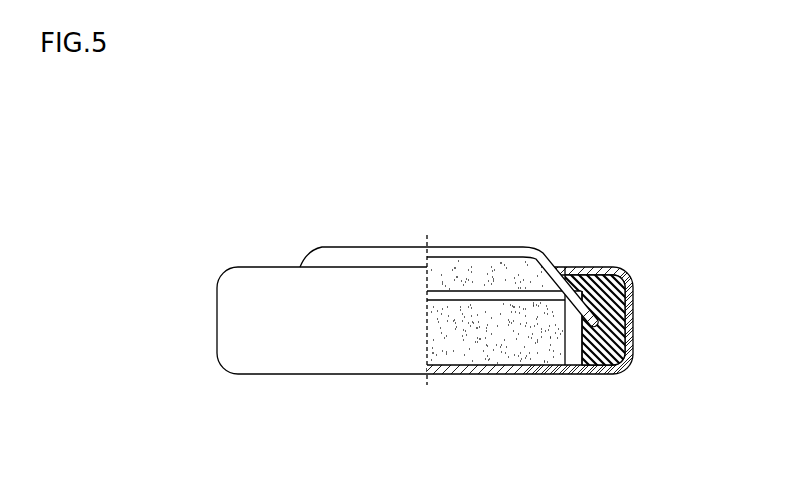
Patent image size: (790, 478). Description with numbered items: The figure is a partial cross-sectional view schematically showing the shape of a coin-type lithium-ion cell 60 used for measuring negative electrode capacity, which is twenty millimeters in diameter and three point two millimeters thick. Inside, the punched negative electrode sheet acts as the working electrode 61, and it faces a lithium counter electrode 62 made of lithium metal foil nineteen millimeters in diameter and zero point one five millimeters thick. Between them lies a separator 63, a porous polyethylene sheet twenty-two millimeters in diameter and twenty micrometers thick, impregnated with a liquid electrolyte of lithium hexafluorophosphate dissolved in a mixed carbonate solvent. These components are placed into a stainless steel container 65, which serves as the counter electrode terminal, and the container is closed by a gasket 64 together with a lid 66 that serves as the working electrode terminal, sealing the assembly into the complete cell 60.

The 2032 cell 60 is at (628, 213).
The working electrode 61 is at (481, 247).
The lithium counter electrode 62 is at (508, 358).
The separator 63 is at (515, 291).
The gasket 64 is at (626, 297).
The stainless steel container 65 is at (352, 360).
The lid 66 is at (368, 247).